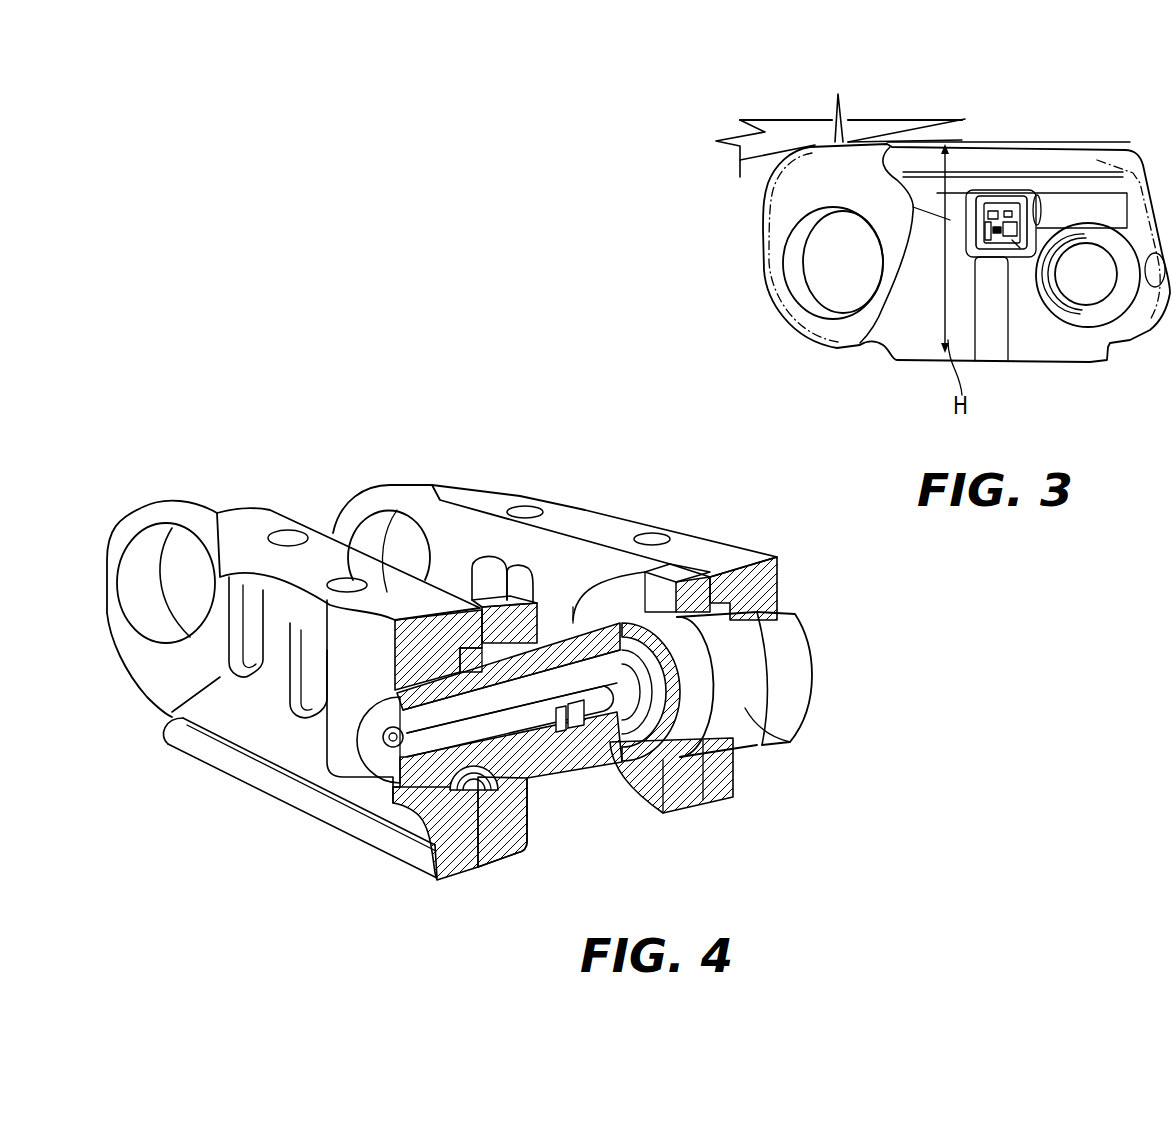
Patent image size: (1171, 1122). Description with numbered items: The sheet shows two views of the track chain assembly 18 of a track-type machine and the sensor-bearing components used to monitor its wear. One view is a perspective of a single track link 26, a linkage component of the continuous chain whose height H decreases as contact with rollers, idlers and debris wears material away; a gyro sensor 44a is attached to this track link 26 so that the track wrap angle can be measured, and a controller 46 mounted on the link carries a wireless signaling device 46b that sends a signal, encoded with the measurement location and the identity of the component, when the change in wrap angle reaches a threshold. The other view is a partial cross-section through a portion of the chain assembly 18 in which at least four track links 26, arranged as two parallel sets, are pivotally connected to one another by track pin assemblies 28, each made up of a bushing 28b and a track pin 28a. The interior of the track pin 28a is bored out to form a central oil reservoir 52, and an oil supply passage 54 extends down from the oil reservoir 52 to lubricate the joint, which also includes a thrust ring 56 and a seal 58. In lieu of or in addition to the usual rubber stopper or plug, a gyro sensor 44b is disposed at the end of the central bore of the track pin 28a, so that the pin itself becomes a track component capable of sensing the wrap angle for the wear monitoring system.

In FIG. 4, the track chain assembly 18 is at (184, 447).
In FIG. 3, the track link 26 is at (1083, 118).
In FIG. 4, the track link 26 is at (279, 504).
In FIG. 4, the track pin assembly 28 is at (760, 733).
In FIG. 4, the track pin 28a is at (788, 648).
In FIG. 4, the bushing 28b is at (745, 708).
In FIG. 3, the gyro sensor 44a is at (1016, 246).
In FIG. 4, the gyro sensor 44b is at (386, 739).
In FIG. 3, the electrical connector 46 is at (991, 199).
In FIG. 3, the wireless signaling device 46b is at (995, 236).
In FIG. 4, the central oil reservoir 52 is at (562, 714).
In FIG. 4, the oil supply passage 54 is at (578, 715).
In FIG. 4, the thrust ring 56 is at (466, 776).
In FIG. 4, the seal 58 is at (507, 789).